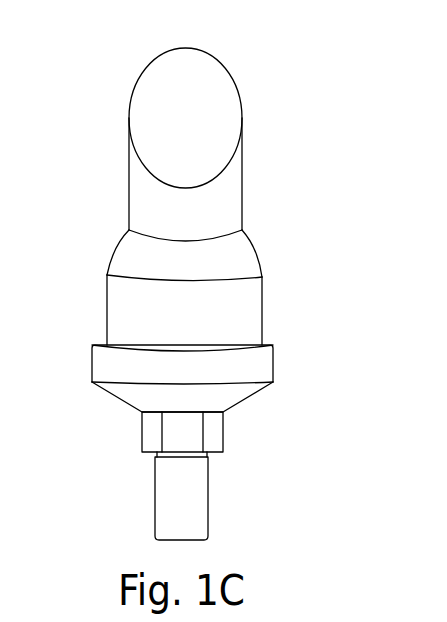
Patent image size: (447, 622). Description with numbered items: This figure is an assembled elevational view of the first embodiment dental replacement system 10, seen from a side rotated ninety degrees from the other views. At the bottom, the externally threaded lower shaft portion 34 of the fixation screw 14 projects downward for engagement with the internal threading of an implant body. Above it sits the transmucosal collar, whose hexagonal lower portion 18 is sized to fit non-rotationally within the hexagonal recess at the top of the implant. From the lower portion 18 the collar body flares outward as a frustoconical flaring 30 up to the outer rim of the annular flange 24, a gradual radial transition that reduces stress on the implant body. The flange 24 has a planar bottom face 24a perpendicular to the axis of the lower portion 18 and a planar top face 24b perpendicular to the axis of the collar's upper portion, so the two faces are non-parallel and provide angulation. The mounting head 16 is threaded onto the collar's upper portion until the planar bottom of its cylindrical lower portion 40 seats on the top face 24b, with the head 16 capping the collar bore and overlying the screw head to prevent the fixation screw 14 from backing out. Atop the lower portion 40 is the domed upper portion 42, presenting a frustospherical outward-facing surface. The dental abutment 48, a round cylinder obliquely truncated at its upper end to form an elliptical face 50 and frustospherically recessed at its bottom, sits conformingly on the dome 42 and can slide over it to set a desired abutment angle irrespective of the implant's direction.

The dental replacement system 10 is at (101, 75).
The fixation screw 14 is at (146, 518).
The mounting head 16 is at (107, 266).
The lower portion 18 is at (227, 444).
The annular flange 24 is at (260, 365).
The bottom face 24a is at (257, 387).
The top face 24b is at (265, 337).
The frustoconical flaring 30 is at (132, 390).
The threaded lower shaft portion 34 is at (193, 512).
The cylindrical lower portion 40 is at (243, 298).
The domed upper portion 42 is at (238, 260).
The dental abutment 48 is at (241, 78).
The elliptical face 50 is at (185, 68).